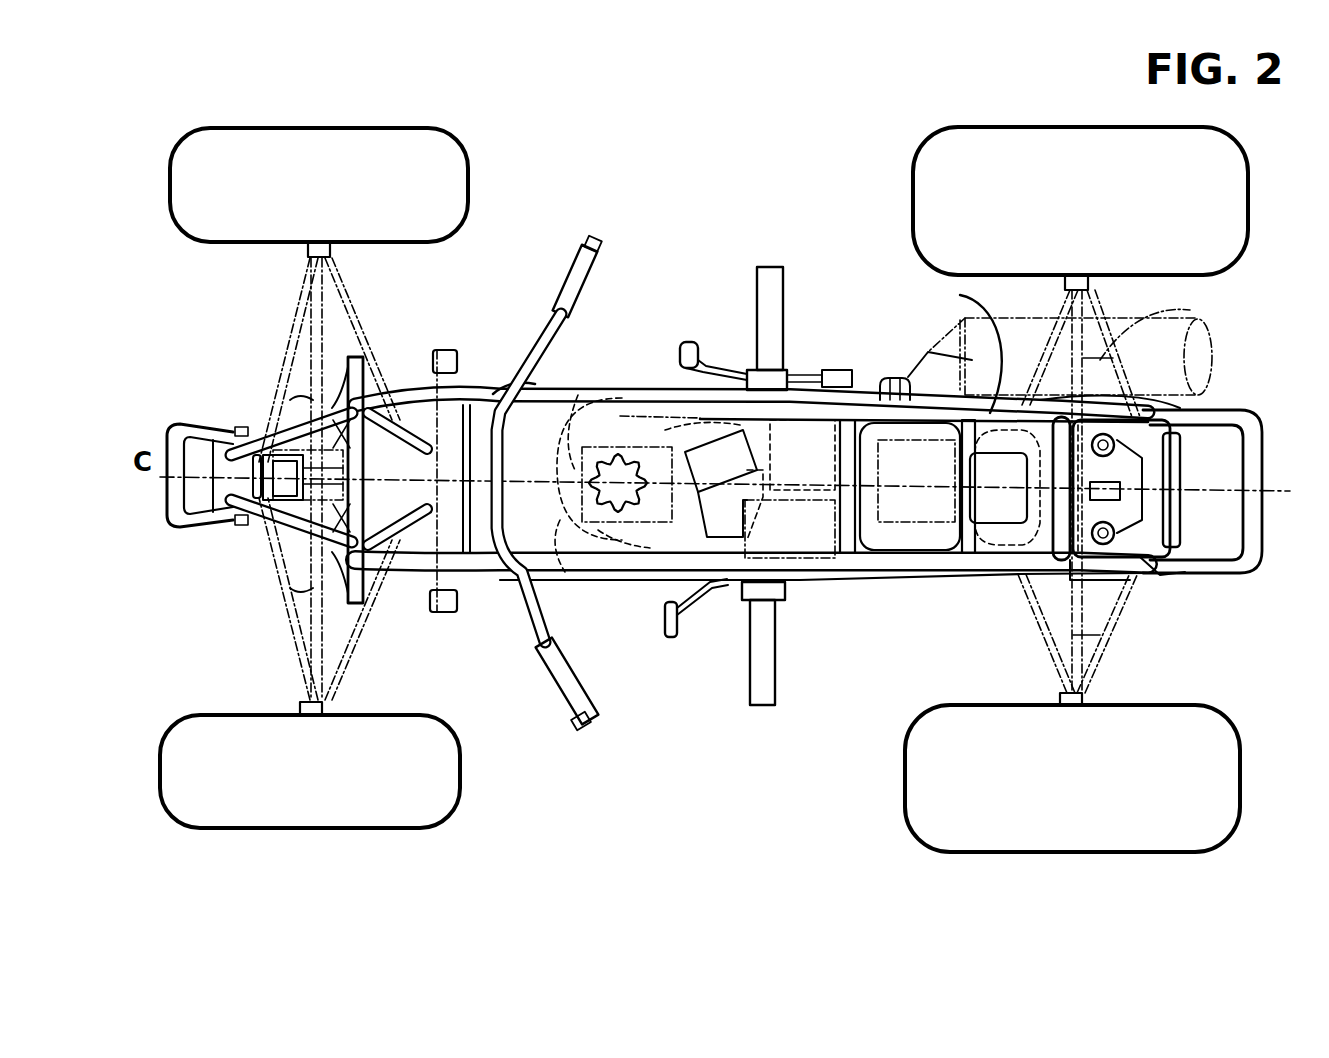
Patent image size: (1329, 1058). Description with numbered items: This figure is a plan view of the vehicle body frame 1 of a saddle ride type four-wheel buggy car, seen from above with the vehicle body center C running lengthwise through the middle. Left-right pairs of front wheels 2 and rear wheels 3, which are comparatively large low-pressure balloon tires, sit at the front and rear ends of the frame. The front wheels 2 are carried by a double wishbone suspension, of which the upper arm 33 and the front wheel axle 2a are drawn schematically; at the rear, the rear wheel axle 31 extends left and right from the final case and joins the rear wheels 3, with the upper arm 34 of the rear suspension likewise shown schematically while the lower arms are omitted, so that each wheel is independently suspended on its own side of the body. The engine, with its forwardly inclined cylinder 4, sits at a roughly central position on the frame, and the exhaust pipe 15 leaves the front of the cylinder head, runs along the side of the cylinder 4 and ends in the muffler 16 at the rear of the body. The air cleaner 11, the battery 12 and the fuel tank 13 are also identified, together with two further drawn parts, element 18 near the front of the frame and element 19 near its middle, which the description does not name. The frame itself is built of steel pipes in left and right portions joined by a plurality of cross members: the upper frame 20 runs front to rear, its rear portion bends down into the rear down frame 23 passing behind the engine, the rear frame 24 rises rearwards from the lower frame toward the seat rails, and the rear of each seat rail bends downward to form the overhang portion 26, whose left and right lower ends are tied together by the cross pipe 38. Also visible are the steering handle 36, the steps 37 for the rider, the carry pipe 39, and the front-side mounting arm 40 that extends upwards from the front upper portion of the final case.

The vehicle body frame 1 is at (488, 378).
The front wheels 2 is at (250, 205).
The front wheel axle 2a is at (282, 358).
The rear wheels 3 is at (952, 157).
The cylinder 4 is at (632, 578).
The air cleaner 11 is at (1023, 560).
The battery 12 is at (843, 575).
The fuel tank 13 is at (578, 573).
The exhaust pipe 15 is at (578, 395).
The muffler 16 is at (928, 352).
The front shock absorber mount 18 is at (435, 348).
The fuel tank 19 is at (798, 372).
The upper frame 20 is at (660, 392).
The rear down frame 23 is at (953, 642).
The rear frame 24 is at (1152, 565).
The overhang portion 26 is at (1180, 408).
The rear wheel axle 31 is at (1195, 328).
The upper arm 33 is at (293, 332).
The upper arm 34 is at (1105, 322).
The steering handle 36 is at (560, 282).
The steps 37 is at (757, 282).
The cross pipe 38 is at (1182, 470).
The carry pipe 39 is at (1262, 448).
The front-side mounting arm 40 is at (1120, 565).